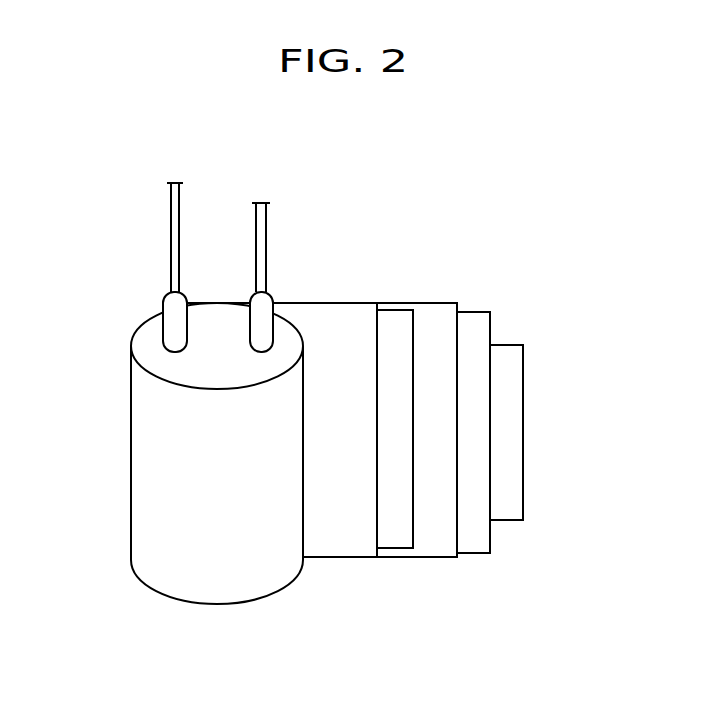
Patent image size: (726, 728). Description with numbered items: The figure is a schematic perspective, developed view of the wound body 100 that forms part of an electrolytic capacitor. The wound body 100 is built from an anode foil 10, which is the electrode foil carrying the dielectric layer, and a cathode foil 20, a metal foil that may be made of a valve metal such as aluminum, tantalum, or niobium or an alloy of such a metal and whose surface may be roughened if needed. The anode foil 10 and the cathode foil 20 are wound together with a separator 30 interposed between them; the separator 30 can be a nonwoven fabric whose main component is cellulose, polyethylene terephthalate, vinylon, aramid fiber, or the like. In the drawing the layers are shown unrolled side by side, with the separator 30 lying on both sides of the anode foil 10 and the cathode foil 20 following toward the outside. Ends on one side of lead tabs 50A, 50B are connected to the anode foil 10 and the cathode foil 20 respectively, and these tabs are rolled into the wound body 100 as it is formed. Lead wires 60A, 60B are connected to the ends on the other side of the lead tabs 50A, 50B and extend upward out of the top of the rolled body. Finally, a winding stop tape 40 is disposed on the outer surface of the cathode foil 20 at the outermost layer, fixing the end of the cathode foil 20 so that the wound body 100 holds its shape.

The wound body 100 is at (375, 191).
The anode foil 10 is at (403, 532).
The cathode foil 20 is at (475, 543).
The separator 30 is at (348, 532).
The winding stop tape 40 is at (505, 512).
The lead tab 50A is at (165, 300).
The lead tab 50B is at (278, 303).
The lead wire 60A is at (170, 218).
The lead wire 60B is at (268, 208).